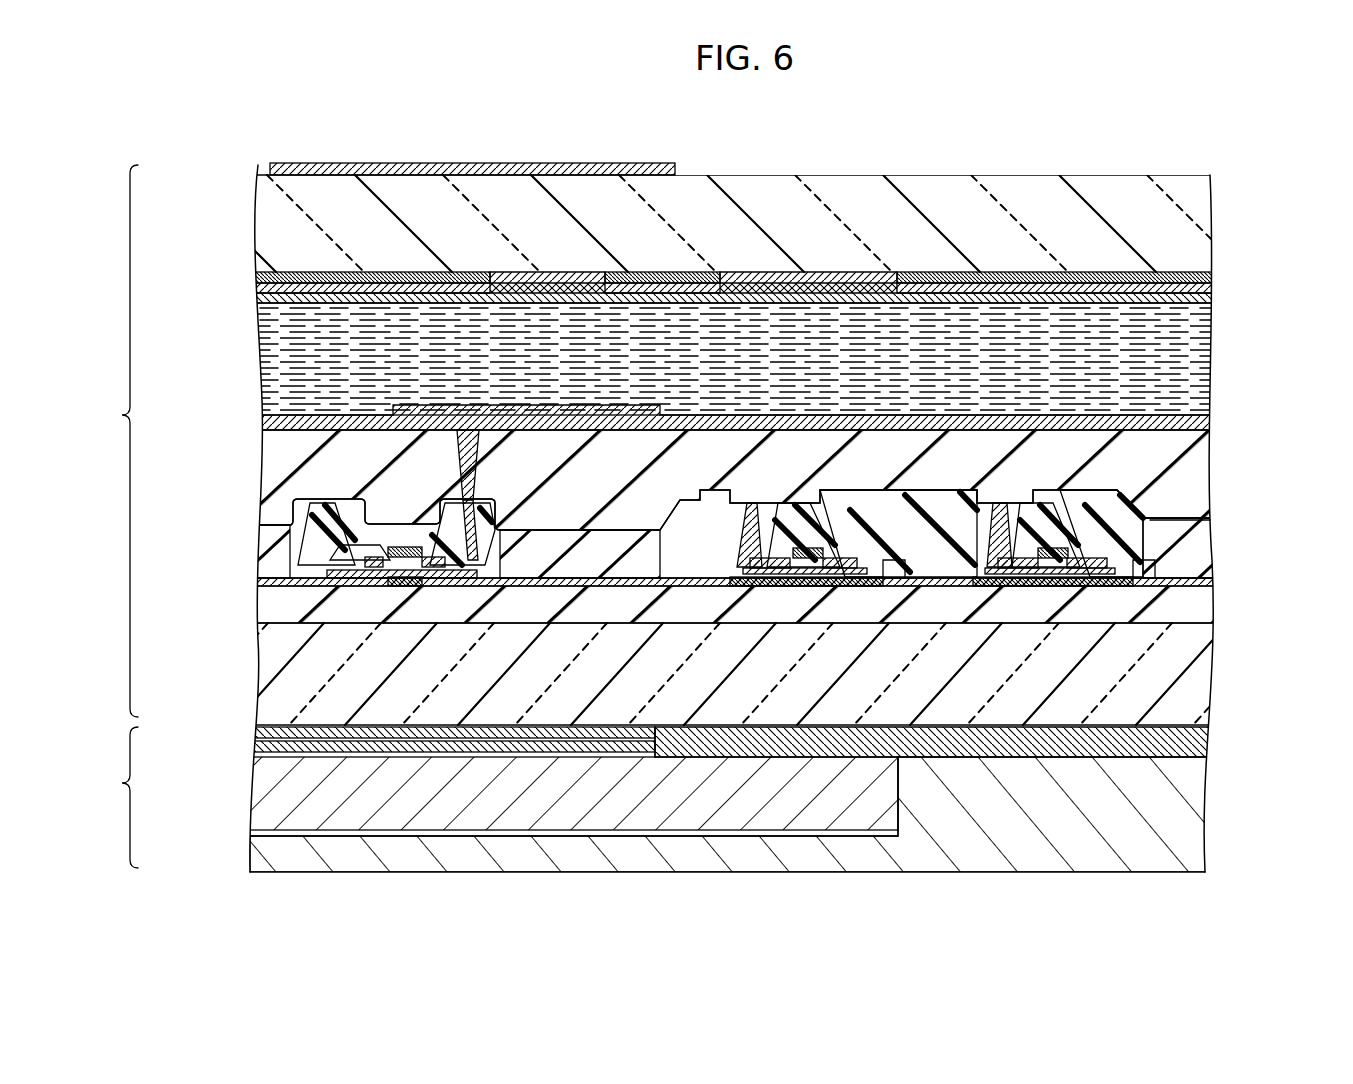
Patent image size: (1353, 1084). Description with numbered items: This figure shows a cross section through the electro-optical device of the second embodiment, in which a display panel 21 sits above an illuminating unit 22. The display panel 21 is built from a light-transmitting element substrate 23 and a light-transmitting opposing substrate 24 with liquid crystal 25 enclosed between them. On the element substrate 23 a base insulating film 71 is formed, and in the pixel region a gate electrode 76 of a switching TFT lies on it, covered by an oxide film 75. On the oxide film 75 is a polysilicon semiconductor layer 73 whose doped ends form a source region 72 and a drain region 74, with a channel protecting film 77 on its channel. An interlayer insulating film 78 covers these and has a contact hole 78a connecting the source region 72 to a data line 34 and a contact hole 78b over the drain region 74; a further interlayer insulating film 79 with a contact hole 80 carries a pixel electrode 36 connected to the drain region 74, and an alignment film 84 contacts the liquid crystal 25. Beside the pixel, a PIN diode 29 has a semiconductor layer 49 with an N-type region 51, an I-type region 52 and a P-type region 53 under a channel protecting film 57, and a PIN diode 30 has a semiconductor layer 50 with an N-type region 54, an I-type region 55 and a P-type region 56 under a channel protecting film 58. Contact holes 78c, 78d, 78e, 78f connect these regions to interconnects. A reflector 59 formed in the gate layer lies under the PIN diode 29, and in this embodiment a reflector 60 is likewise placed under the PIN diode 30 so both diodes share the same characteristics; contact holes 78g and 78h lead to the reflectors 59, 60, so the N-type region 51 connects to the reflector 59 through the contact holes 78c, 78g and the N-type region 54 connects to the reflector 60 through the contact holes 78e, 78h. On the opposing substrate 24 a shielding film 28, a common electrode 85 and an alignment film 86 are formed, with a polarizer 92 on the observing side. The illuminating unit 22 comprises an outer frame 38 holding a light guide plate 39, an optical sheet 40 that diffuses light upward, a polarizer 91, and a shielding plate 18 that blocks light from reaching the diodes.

The shielding plate 18 is at (1195, 742).
The display panel 21 is at (115, 441).
The illuminating unit 22 is at (115, 797).
The element substrate 23 is at (1195, 682).
The opposing substrate 24 is at (1200, 205).
The liquid crystal 25 is at (1195, 370).
The shielding film 28 is at (372, 272).
The PIN diode 29 is at (867, 917).
The PIN diode 30 is at (1127, 917).
The data line 34 is at (320, 518).
The pixel electrode 36 is at (513, 415).
The outer frame 38 is at (1195, 836).
The light guide plate 39 is at (290, 790).
The optical sheet 40 is at (270, 746).
The semiconductor layer 49 is at (745, 585).
The semiconductor layer 50 is at (990, 585).
The N-type region 51 is at (770, 566).
The I-type region 52 is at (805, 560).
The P-type region 53 is at (840, 566).
The N-type region 54 is at (1015, 566).
The I-type region 55 is at (1050, 560).
The P-type region 56 is at (1085, 566).
The channel protecting film 57 is at (662, 640).
The channel protecting film 58 is at (1165, 560).
The reflector 59 is at (890, 580).
The reflector 60 is at (1140, 580).
The base insulating film 71 is at (1195, 606).
The source region 72 is at (352, 585).
The semiconductor layer 73 is at (355, 600).
The drain region 74 is at (465, 545).
The oxide film 75 is at (1195, 583).
The gate electrode 76 is at (410, 560).
The channel protecting film 77 is at (370, 572).
The interlayer insulating film 78 is at (1195, 540).
The contact hole 78a is at (350, 555).
The contact hole 78b is at (488, 520).
The contact hole 78c is at (780, 540).
The contact hole 78d is at (870, 510).
The contact hole 78e is at (1030, 540).
The contact hole 78f is at (1100, 505).
The contact hole 78g is at (745, 555).
The contact hole 78h is at (995, 555).
The interlayer insulating film 79 is at (1195, 487).
The contact hole 80 is at (455, 460).
The alignment film 84 is at (1195, 424).
The common electrode 85 is at (1195, 288).
The alignment film 86 is at (1195, 299).
The polarizer 91 is at (270, 732).
The polarizer 92 is at (306, 165).